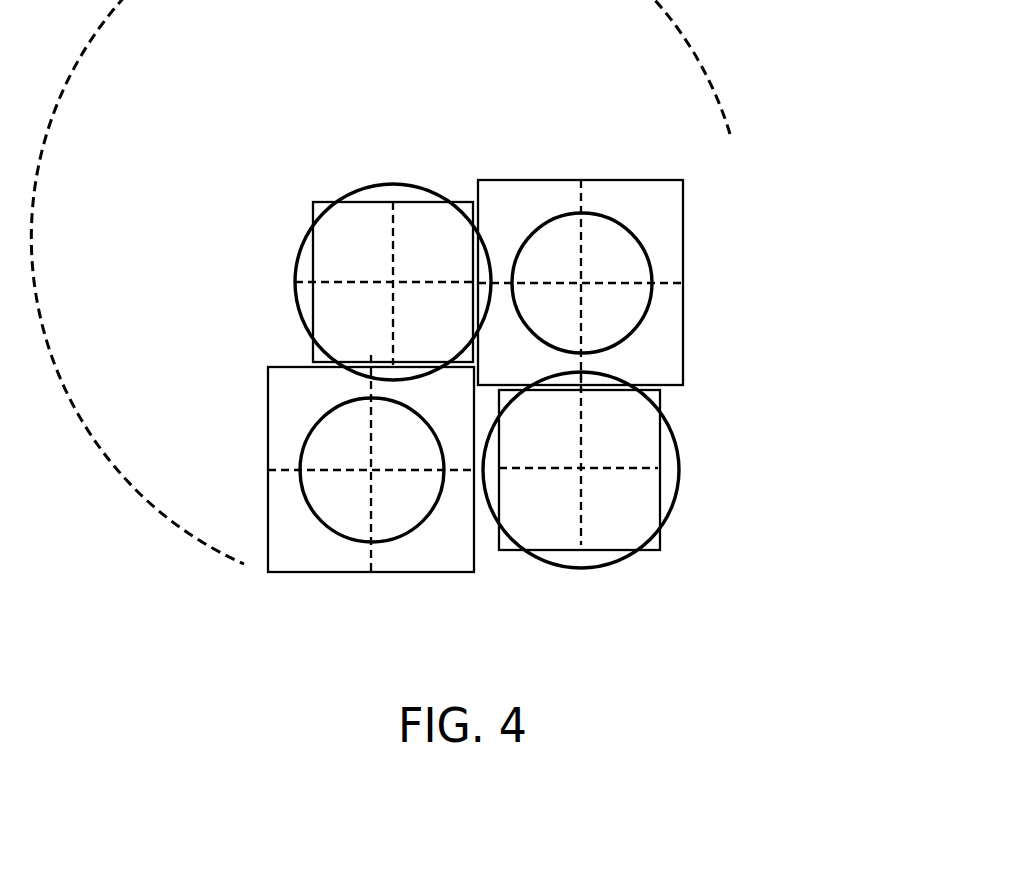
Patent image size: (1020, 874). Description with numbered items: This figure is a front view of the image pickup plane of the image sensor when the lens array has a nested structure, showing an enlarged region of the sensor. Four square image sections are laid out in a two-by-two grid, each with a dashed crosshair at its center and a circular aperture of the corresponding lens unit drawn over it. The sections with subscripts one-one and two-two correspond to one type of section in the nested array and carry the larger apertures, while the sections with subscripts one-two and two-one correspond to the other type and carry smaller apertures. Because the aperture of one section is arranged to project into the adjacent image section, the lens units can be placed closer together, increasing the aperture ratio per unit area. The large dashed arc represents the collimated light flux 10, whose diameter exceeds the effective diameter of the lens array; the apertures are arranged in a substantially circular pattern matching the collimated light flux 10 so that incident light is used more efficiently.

The collimated light flux 10 is at (712, 130).